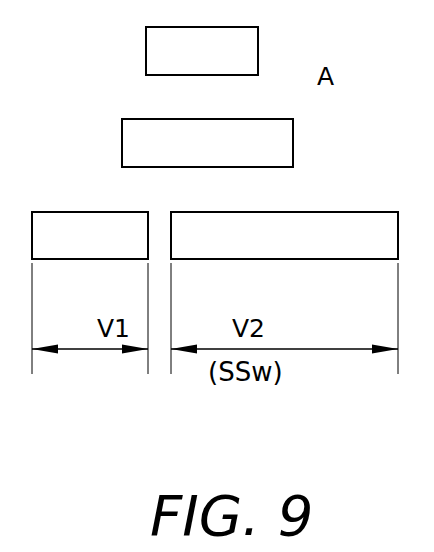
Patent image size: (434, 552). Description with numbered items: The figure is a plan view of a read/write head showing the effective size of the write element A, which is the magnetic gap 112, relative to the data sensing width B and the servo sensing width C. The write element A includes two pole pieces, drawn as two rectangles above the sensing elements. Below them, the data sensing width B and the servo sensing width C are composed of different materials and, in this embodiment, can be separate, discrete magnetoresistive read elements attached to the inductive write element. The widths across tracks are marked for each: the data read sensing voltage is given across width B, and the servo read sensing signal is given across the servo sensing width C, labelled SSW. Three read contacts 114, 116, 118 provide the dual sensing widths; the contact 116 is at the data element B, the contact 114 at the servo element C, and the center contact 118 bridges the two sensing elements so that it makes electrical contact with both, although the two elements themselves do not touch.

The magnetic gap 112 is at (143, 91).
The read contact 114 is at (398, 212).
The read contact 116 is at (32, 211).
The center contact 118 is at (160, 211).